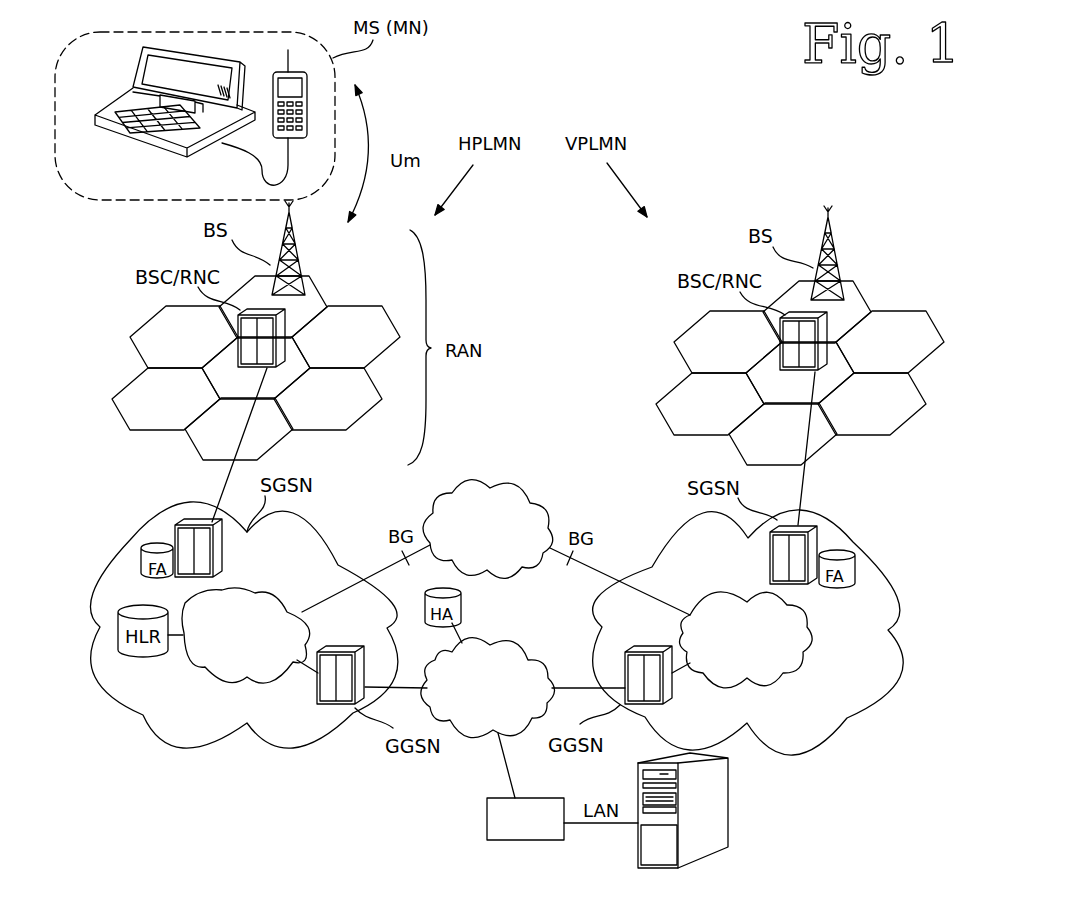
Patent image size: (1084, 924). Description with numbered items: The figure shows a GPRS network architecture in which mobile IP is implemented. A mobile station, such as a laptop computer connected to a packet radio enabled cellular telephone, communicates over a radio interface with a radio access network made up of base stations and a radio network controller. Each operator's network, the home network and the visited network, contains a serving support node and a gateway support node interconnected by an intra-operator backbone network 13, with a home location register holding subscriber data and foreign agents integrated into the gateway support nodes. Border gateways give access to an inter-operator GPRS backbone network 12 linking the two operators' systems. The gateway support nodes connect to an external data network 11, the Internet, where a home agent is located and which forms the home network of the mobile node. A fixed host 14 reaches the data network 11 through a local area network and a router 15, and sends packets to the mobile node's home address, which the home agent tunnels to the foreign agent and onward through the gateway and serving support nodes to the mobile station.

The data network 11 is at (533, 660).
The inter-operator GPRS backbone network 12 is at (522, 486).
The intra-operator backbone network 13 is at (188, 660).
The fixed host 14 is at (728, 830).
The router 15 is at (485, 805).